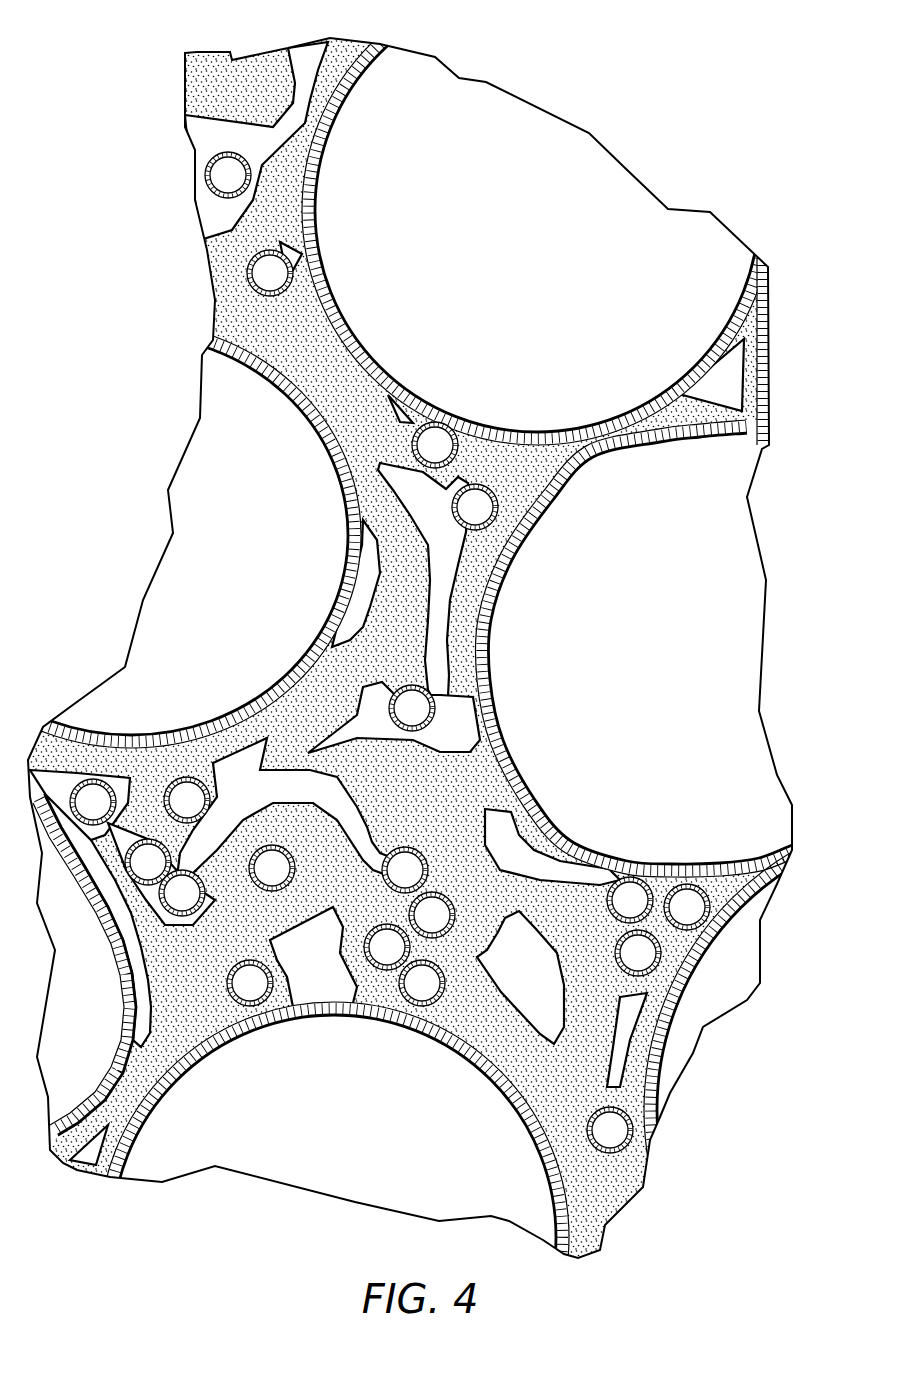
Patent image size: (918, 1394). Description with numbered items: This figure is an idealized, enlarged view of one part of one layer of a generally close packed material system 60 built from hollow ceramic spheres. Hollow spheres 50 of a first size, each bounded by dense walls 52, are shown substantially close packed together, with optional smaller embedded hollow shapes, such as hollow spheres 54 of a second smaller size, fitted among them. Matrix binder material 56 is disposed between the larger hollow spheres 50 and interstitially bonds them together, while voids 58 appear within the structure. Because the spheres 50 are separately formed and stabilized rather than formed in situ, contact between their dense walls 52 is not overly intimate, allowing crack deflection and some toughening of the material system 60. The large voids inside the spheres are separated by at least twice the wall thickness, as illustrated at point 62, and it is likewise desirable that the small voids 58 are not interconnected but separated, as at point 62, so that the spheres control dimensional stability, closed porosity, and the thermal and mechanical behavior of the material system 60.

The hollow spheres 50 is at (589, 186).
The walls 52 is at (321, 181).
The hollow spheres 54 is at (270, 273).
The matrix binder material 56 is at (258, 63).
The voids 58 is at (307, 53).
The material system 60 is at (459, 697).
The point 62 is at (349, 391).